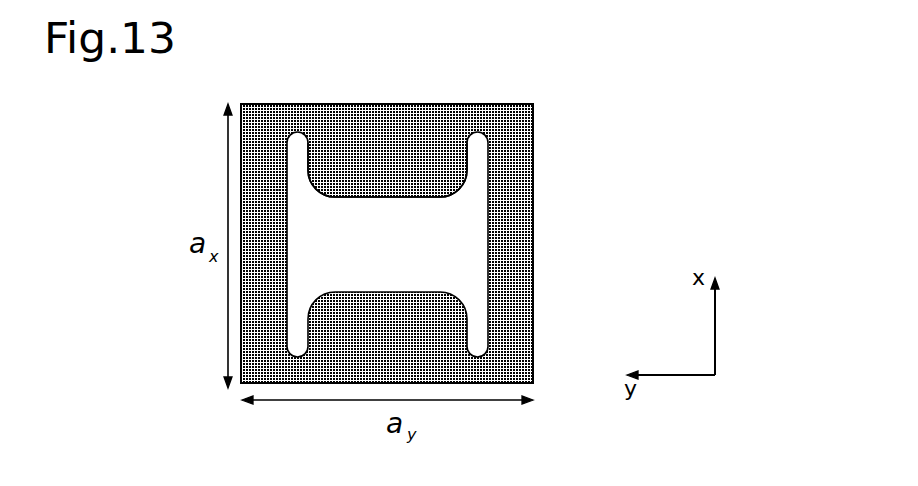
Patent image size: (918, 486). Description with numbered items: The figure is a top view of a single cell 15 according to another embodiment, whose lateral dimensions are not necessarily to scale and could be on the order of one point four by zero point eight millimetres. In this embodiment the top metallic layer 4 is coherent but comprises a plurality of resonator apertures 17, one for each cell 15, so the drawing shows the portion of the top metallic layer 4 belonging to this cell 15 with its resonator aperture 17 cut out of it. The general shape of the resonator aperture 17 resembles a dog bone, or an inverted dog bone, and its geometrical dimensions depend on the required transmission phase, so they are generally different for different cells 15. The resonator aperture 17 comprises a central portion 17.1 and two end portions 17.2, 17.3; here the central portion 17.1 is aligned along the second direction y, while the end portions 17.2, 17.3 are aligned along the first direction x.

The cell 15 is at (377, 106).
The top metallic layer 4 is at (392, 358).
The resonator aperture 17 is at (401, 258).
The central portion 17.1 is at (379, 191).
The end portion 17.2 is at (316, 158).
The end portion 17.3 is at (496, 164).